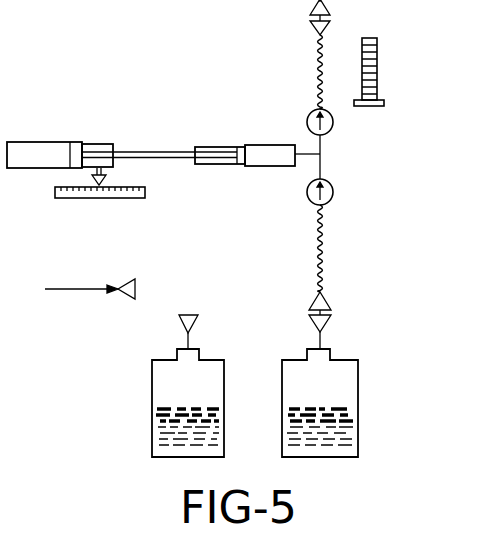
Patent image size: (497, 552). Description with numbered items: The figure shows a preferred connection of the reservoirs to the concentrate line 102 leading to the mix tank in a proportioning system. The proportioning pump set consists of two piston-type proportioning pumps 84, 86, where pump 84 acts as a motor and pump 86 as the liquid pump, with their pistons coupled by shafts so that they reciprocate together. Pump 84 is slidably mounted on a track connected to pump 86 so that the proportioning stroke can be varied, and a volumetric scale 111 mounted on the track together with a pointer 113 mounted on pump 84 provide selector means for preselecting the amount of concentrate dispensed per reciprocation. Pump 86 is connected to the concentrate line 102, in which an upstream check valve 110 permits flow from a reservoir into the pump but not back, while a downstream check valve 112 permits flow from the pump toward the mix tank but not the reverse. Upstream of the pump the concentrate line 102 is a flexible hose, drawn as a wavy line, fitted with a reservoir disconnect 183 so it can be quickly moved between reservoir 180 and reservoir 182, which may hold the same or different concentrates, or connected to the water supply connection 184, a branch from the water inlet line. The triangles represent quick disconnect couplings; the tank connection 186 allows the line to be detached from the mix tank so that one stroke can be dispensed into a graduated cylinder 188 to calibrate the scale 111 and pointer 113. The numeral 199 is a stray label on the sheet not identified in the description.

The proportioning pump 84 is at (37, 142).
The proportioning pump 86 is at (258, 145).
The concentrate line 102 is at (321, 253).
The upstream check valve 110 is at (333, 192).
The volumetric scale 111 is at (135, 198).
The downstream check valve 112 is at (333, 122).
The pointer 113 is at (106, 170).
The reservoir 180 is at (340, 383).
The reservoir 182 is at (200, 384).
The reservoir disconnect 183 is at (309, 315).
The water supply connection 184 is at (45, 289).
The tank connection 186 is at (311, 16).
The graduated cylinder 188 is at (377, 63).
The label 199 is at (21, 523).